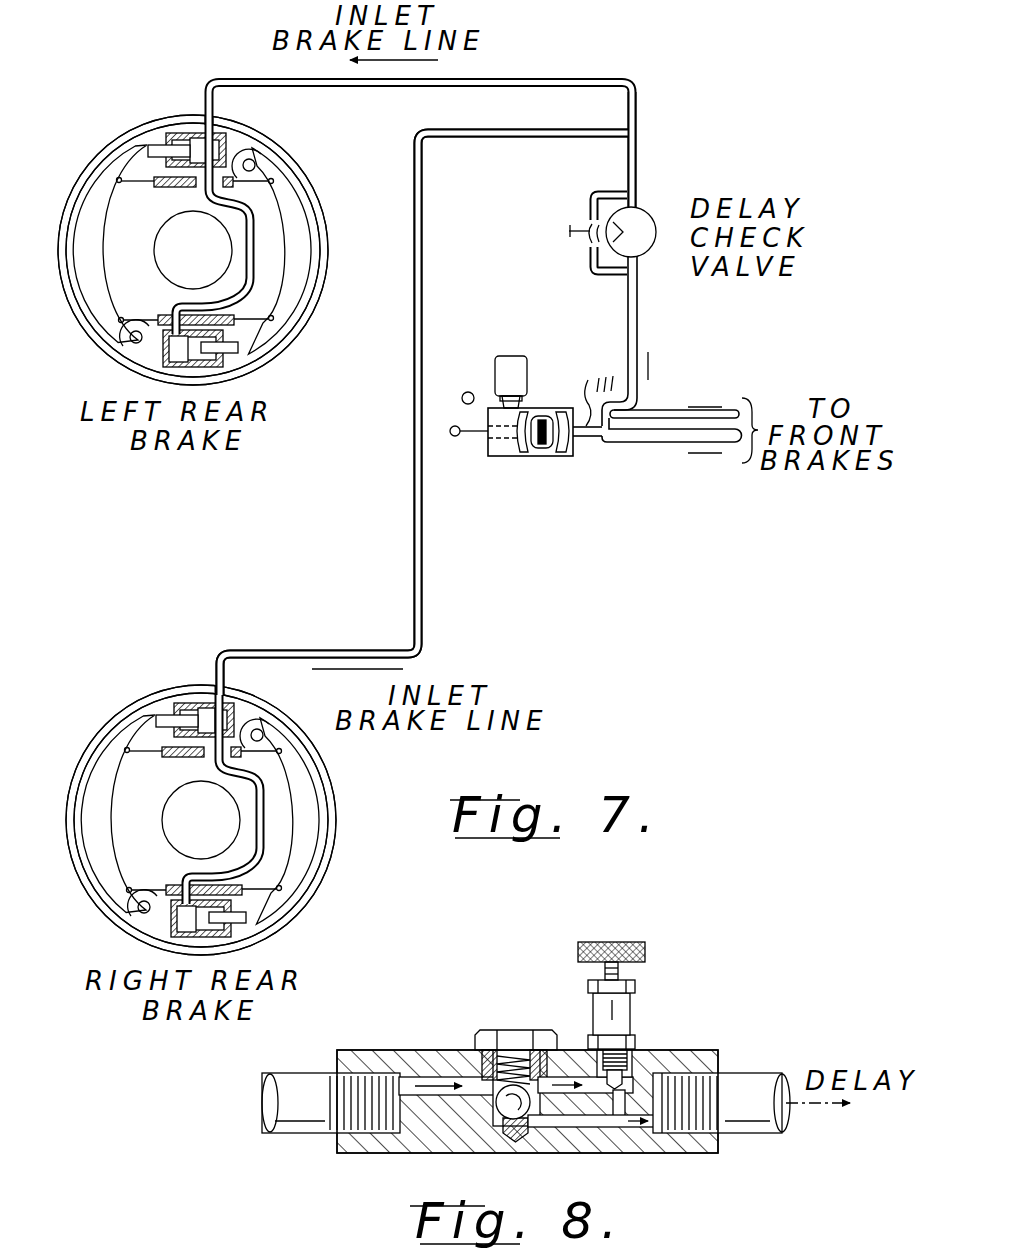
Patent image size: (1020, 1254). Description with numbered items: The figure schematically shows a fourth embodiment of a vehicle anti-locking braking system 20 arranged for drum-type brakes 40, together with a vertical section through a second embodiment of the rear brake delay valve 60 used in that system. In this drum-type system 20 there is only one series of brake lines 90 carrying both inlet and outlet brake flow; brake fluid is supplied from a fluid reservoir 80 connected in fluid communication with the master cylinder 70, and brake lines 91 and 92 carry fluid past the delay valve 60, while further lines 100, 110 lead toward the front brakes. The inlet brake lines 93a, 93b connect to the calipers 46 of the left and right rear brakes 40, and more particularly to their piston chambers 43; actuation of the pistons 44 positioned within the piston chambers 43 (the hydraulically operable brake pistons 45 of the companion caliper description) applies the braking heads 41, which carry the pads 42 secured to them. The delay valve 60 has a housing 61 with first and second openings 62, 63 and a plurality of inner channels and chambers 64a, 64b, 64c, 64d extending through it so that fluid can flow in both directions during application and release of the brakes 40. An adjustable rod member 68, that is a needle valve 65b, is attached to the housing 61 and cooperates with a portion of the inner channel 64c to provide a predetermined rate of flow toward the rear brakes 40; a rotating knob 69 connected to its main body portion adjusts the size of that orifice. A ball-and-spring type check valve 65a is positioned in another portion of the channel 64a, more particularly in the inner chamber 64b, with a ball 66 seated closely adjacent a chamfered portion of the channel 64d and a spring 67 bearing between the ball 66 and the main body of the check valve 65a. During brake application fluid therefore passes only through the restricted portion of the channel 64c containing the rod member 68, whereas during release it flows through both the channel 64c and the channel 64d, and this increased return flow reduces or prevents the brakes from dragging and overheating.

In FIG. 7, the vehicle anti-locking braking system 20 is at (775, 72).
In FIG. 7, the drum-type brake 40 is at (104, 466).
In FIG. 7, the braking head 41 is at (105, 305).
In FIG. 7, the pad 42 is at (110, 160).
In FIG. 7, the piston chamber 43 is at (178, 134).
In FIG. 7, the piston 44 is at (197, 142).
In FIG. 7, the brake piston 45 is at (232, 178).
In FIG. 7, the caliper 46 is at (255, 262).
In FIG. 7, the rear brake delay valve 60 is at (611, 289).
In FIG. 8, the rear brake delay valve 60 is at (756, 1008).
In FIG. 8, the housing 61 is at (380, 1150).
In FIG. 8, the first opening 62 is at (307, 1120).
In FIG. 8, the second opening 63 is at (748, 1120).
In FIG. 8, the inner channel 64a is at (470, 1090).
In FIG. 8, the inner chamber 64b is at (497, 1096).
In FIG. 8, the inner channel 64c is at (560, 1082).
In FIG. 8, the inner channel 64d is at (610, 1128).
In FIG. 7, the ball-and-spring check valve 65a is at (648, 210).
In FIG. 8, the ball-and-spring check valve 65a is at (525, 1045).
In FIG. 7, the needle valve 65b is at (590, 222).
In FIG. 8, the needle valve 65b is at (588, 985).
In FIG. 8, the ball 66 is at (483, 1076).
In FIG. 8, the spring 67 is at (510, 1084).
In FIG. 8, the adjustable rod member 68 is at (624, 1068).
In FIG. 8, the rotating knob 69 is at (645, 950).
In FIG. 7, the master cylinder 70 is at (555, 461).
In FIG. 7, the fluid reservoir 80 is at (544, 387).
In FIG. 7, the brake lines 90 is at (526, 158).
In FIG. 7, the brake line 91 is at (638, 333).
In FIG. 7, the inlet brake line 92 is at (638, 150).
In FIG. 7, the inlet brake line 93a is at (548, 130).
In FIG. 7, the inlet brake line 93b is at (597, 52).
In FIG. 7, the front brake lines 100 is at (669, 449).
In FIG. 7, the outlet line 110 is at (587, 446).